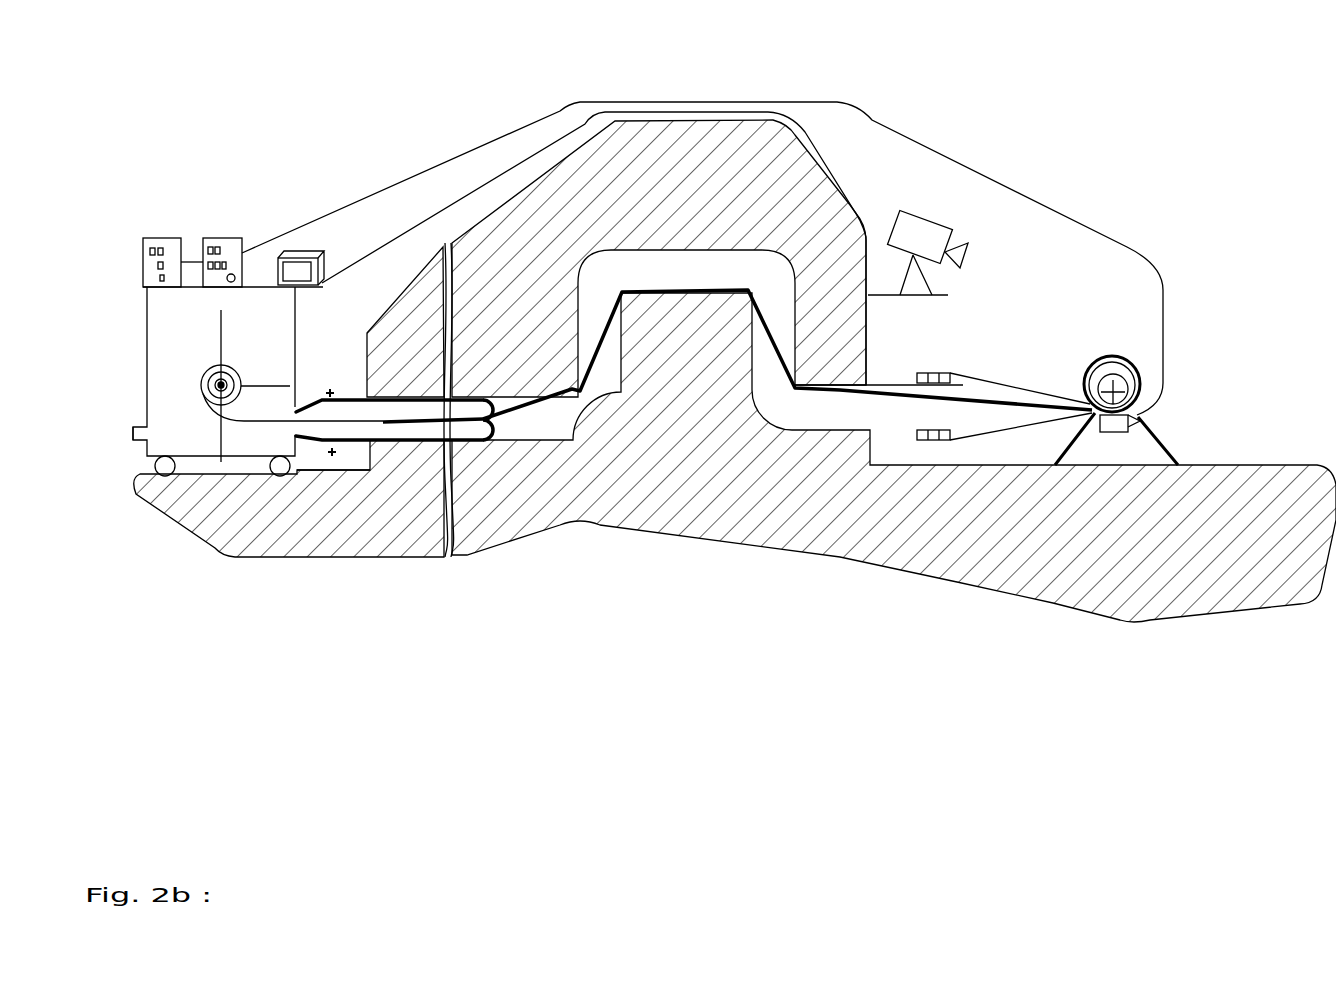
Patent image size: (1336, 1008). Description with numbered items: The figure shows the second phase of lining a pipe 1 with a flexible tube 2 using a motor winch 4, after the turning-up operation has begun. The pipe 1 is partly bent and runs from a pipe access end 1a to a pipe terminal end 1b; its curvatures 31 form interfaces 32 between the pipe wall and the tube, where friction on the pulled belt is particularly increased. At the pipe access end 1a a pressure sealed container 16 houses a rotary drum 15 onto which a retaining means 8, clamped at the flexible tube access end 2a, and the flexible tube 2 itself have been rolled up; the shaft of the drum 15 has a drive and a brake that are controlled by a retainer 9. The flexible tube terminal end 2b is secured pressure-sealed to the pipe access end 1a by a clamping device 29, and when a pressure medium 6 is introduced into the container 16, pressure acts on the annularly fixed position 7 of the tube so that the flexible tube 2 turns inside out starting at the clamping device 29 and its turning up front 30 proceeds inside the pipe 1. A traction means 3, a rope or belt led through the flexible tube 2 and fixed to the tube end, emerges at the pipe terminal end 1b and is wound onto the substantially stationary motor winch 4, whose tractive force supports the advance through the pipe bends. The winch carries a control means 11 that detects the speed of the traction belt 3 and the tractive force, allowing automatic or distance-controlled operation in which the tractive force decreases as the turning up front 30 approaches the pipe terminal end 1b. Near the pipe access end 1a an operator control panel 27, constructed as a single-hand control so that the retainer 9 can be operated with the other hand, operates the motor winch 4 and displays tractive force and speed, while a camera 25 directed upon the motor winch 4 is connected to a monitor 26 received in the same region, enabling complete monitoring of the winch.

The pipe 1 is at (534, 440).
The pipe access end 1a is at (339, 458).
The pipe terminal end 1b is at (958, 437).
The flexible tube 2 is at (414, 438).
The flexible tube access end 2a is at (383, 422).
The flexible tube terminal end 2b is at (303, 403).
The traction means 3 is at (840, 393).
The motor winch 4 is at (1178, 378).
The pressure medium 6 is at (134, 434).
The annularly fixed position 7 is at (306, 440).
The retaining means 8 is at (246, 421).
The retainer 9 is at (150, 267).
The control means 11 is at (1117, 422).
The drum 15 is at (201, 386).
The pressure sealed container 16 is at (146, 417).
The camera 25 is at (914, 237).
The monitor 26 is at (302, 250).
The operator control panel 27 is at (224, 243).
The clamping device 29 is at (320, 399).
The turning up front 30 is at (485, 442).
The curvatures 31 is at (667, 249).
The interfaces 32 is at (573, 389).